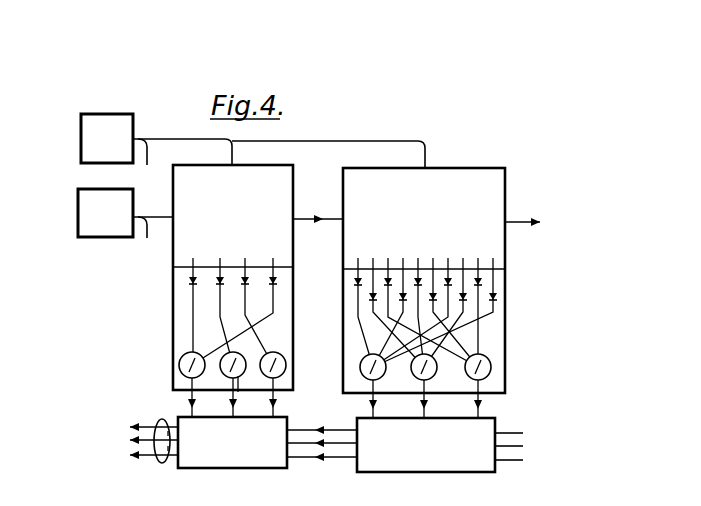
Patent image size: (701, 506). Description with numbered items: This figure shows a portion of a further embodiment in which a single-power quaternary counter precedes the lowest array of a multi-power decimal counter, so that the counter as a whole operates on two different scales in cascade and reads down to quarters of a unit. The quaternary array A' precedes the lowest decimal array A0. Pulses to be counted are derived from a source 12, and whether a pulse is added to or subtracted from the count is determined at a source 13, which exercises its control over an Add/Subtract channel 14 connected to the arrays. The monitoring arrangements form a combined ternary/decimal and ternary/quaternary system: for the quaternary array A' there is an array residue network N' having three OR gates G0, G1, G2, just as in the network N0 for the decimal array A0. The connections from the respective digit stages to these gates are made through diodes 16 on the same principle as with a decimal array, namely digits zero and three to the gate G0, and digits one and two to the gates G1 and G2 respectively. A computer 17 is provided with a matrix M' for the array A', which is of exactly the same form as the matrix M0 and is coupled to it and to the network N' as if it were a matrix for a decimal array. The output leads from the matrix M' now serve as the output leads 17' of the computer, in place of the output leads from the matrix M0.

The source 12 is at (105, 213).
The source 13 is at (107, 138).
The Add/Subtract channel 14 is at (181, 137).
The diodes 16 is at (191, 282).
The computer 17 is at (322, 458).
The output leads 17' is at (156, 457).
The OR gate G0 is at (179, 365).
The OR gate G1 is at (238, 391).
The OR gate G2 is at (286, 365).
The array residue network N' is at (304, 301).
The array residue network N0 is at (503, 362).
The quaternary array A' is at (233, 288).
The lowest decimal array A0 is at (438, 234).
The matrix M' is at (232, 442).
The matrix M0 is at (436, 456).